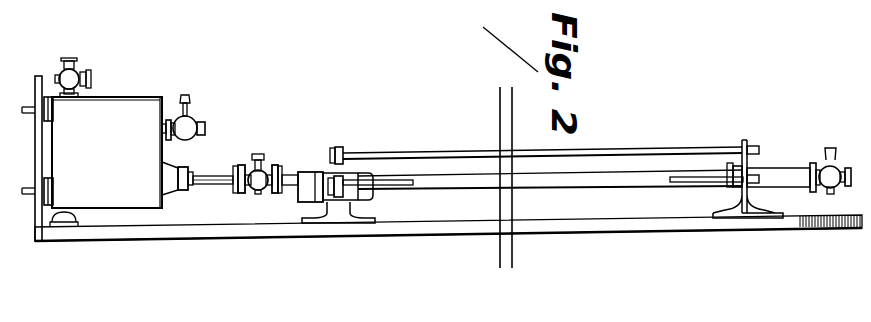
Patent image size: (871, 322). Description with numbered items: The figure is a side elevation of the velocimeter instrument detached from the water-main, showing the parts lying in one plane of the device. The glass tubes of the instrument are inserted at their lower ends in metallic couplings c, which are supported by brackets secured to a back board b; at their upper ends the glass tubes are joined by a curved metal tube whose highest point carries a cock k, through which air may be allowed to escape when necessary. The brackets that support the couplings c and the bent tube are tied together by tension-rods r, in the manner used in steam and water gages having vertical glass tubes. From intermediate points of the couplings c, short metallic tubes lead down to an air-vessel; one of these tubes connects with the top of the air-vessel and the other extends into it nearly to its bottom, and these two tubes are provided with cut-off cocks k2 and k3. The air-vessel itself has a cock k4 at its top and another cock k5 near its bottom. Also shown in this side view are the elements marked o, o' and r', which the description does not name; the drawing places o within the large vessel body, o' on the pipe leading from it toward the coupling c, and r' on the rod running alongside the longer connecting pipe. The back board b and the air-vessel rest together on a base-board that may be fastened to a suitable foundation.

The tank / reservoir o is at (103, 152).
The outlet pipe of tank o' is at (230, 167).
The cock k is at (818, 165).
The cut-off cock k2 is at (583, 188).
The cut-off cock k3 is at (251, 168).
The cock k4 is at (199, 128).
The cock k5 is at (78, 74).
The metallic coupling c is at (323, 172).
The back board b is at (332, 223).
The tension-rod r is at (551, 144).
The piston rod r' is at (543, 192).